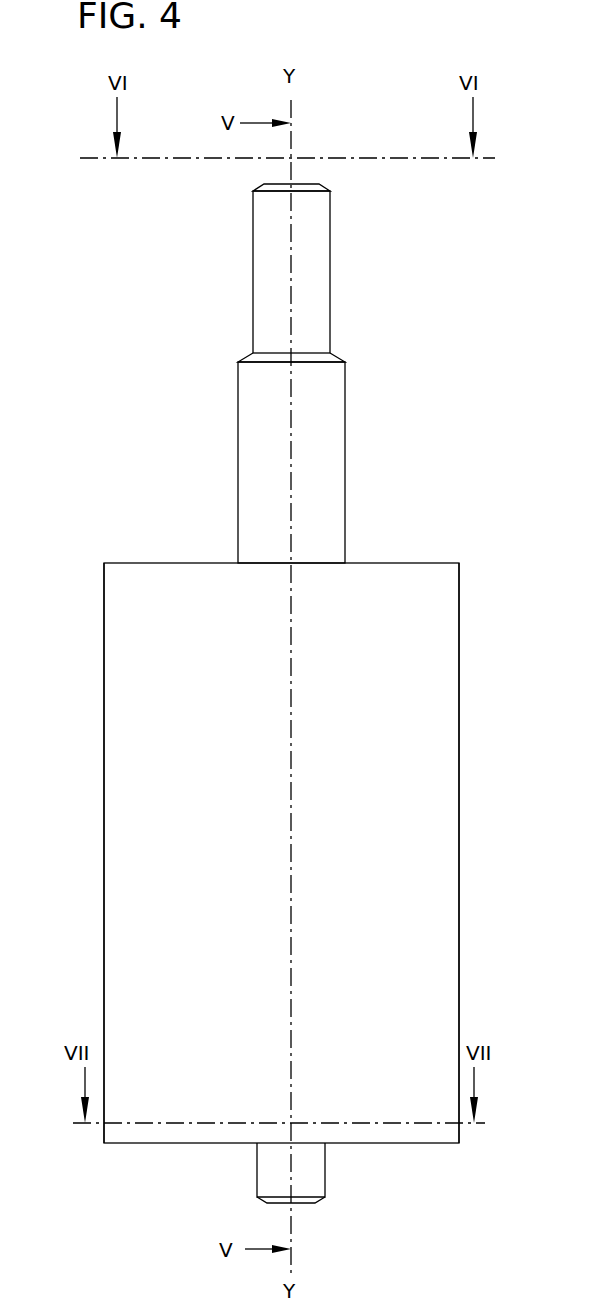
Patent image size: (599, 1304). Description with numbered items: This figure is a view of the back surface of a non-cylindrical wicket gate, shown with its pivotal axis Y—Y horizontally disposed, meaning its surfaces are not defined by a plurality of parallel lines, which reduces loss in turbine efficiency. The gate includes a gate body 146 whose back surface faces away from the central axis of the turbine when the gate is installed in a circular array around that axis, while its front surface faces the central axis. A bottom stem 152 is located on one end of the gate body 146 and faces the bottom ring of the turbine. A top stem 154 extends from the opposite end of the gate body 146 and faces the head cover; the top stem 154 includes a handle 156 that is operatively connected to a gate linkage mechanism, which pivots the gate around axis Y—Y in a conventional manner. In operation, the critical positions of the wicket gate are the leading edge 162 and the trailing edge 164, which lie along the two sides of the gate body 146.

The gate body 146 is at (152, 743).
The bottom stem 152 is at (257, 1176).
The top stem 154 is at (238, 415).
The handle 156 is at (253, 235).
The leading edge 162 is at (104, 845).
The trailing edge 164 is at (459, 848).